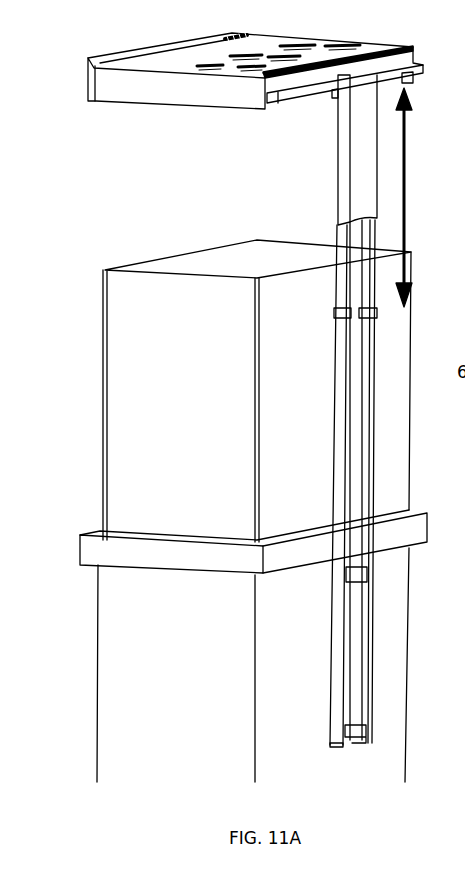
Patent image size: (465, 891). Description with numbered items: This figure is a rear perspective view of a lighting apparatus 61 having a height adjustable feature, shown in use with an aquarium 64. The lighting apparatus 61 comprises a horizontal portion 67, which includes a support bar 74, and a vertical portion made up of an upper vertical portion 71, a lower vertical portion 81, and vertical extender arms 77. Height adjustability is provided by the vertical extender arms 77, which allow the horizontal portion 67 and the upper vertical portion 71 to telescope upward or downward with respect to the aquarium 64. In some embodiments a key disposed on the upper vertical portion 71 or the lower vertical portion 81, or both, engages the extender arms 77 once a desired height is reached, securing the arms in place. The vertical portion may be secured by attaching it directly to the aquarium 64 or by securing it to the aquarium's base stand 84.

The lighting apparatus 61 is at (317, 34).
The horizontal portion 67 is at (117, 78).
The support bar 74 is at (270, 101).
The upper vertical portion 71 is at (345, 182).
The vertical extender arms 77 is at (340, 263).
The lower vertical portion 81 is at (363, 402).
The aquarium 64 is at (120, 380).
The base stand 84 is at (390, 700).